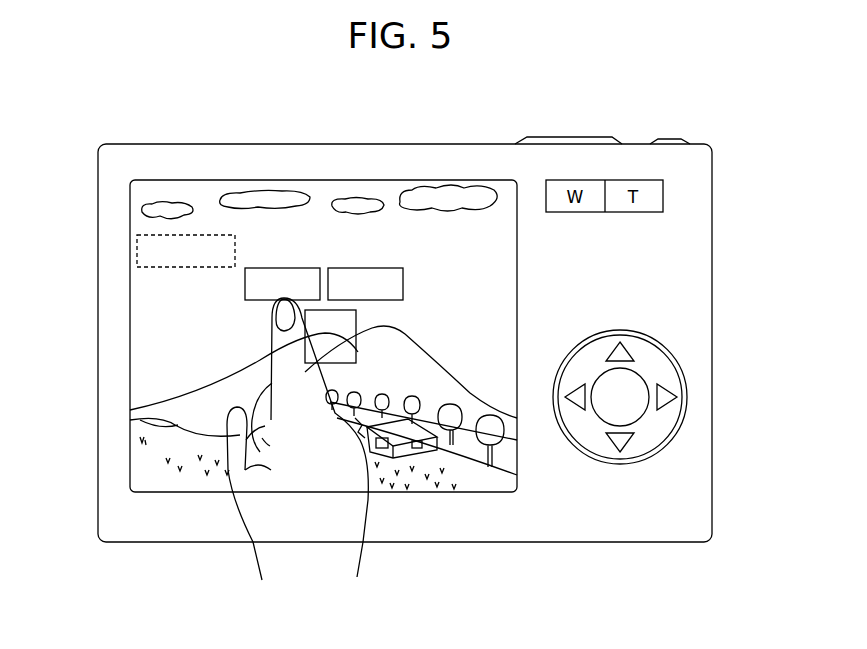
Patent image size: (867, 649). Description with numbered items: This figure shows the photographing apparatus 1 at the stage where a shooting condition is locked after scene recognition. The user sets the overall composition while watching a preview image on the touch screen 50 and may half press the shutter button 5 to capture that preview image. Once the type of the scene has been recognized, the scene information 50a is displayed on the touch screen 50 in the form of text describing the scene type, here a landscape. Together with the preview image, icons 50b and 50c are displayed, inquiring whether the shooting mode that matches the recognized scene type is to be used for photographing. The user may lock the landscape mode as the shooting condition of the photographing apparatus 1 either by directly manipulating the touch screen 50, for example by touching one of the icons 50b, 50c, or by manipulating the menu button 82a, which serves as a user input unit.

The photographing apparatus 1 is at (430, 142).
The shutter button 5 is at (568, 136).
The touch screen 50 is at (325, 180).
The scene information 50a is at (137, 249).
The icon 50b is at (245, 282).
The icon 50c is at (403, 284).
The menu button 82a is at (648, 377).